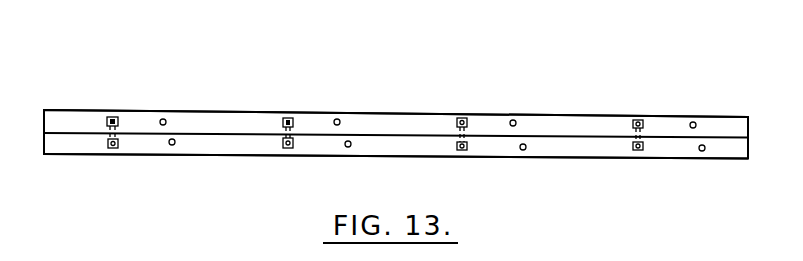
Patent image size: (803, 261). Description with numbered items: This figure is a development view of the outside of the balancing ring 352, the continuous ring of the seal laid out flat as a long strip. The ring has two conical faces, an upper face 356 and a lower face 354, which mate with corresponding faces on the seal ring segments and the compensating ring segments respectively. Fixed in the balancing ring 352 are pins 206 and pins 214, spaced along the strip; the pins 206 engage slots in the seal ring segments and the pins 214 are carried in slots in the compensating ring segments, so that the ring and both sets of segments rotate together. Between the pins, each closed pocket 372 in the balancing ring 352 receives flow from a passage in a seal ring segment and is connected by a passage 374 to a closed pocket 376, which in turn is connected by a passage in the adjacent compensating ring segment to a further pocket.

The balancing ring 352 is at (405, 102).
The conical face 354 is at (218, 143).
The conical face 356 is at (214, 122).
The pin 206 is at (165, 119).
The pin 214 is at (173, 145).
The closed pocket 372 is at (113, 117).
The passage 374 is at (106, 128).
The closed pocket 376 is at (113, 148).